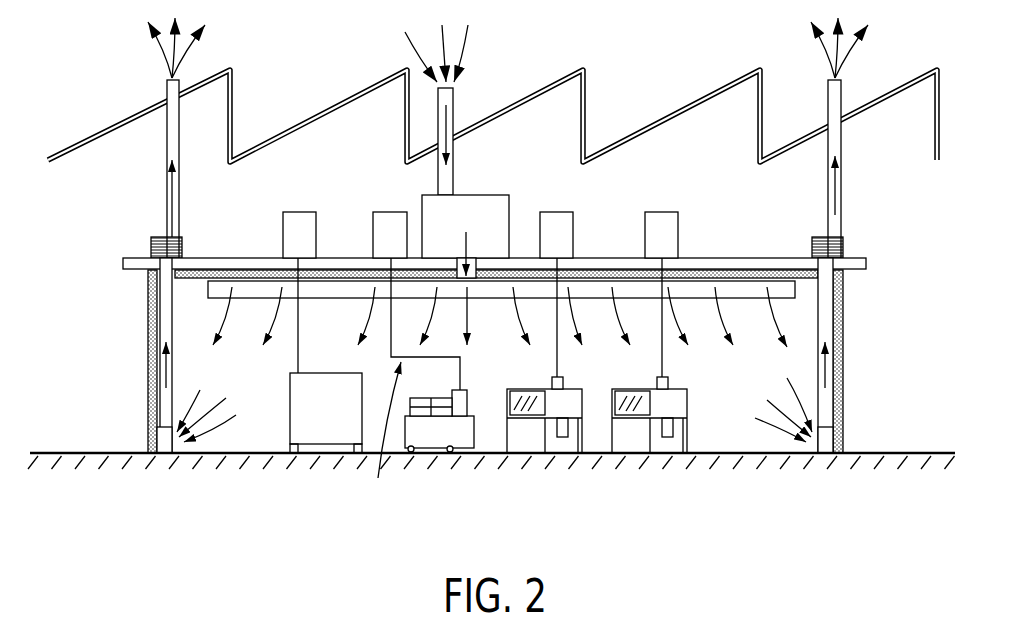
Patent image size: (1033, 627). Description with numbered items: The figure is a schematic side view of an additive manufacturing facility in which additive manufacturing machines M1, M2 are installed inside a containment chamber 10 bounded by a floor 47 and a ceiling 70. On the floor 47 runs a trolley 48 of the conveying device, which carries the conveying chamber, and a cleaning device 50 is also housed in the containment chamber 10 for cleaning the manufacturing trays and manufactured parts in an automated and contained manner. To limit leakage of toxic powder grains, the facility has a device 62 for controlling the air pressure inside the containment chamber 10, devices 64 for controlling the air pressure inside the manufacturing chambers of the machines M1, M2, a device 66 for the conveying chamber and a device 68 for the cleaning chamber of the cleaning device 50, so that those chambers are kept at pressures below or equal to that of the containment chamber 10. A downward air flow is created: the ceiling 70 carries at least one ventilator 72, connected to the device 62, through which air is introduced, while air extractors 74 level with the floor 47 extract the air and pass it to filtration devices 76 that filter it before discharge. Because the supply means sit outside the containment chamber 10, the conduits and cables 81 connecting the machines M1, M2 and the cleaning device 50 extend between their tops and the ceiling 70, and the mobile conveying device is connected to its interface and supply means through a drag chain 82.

The containment chamber 10 is at (292, 126).
The floor 47 is at (233, 458).
The trolley 48 is at (440, 446).
The cleaning device 50 is at (325, 447).
The device for controlling the air pressure inside the containment chamber 62 is at (496, 208).
The devices for controlling the air pressure inside the manufacturing chambers 64 is at (565, 230).
The device for controlling the air pressure inside each conveying chamber 66 is at (383, 210).
The device for controlling the air pressure inside the cleaning chamber 68 is at (298, 210).
The ceiling 70 is at (225, 268).
The ventilator 72 is at (258, 290).
The air extractor 74 is at (157, 438).
The filtration device 76 is at (152, 247).
The conduits and cables 81 is at (712, 371).
The drag chain 82 is at (382, 446).
The additive manufacturing machine M1 is at (559, 445).
The additive manufacturing machine M2 is at (664, 445).